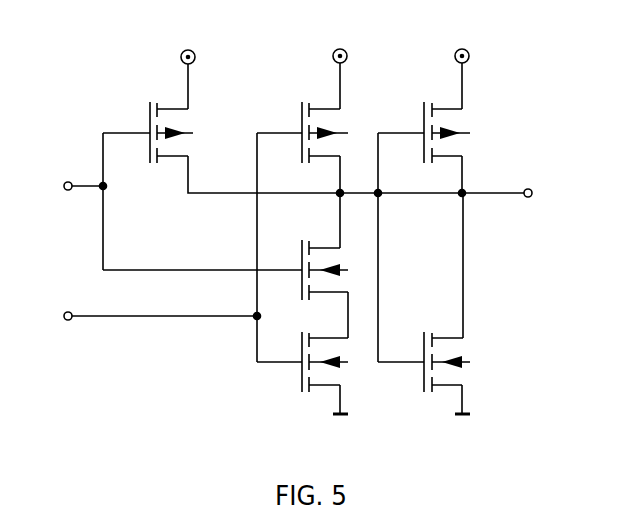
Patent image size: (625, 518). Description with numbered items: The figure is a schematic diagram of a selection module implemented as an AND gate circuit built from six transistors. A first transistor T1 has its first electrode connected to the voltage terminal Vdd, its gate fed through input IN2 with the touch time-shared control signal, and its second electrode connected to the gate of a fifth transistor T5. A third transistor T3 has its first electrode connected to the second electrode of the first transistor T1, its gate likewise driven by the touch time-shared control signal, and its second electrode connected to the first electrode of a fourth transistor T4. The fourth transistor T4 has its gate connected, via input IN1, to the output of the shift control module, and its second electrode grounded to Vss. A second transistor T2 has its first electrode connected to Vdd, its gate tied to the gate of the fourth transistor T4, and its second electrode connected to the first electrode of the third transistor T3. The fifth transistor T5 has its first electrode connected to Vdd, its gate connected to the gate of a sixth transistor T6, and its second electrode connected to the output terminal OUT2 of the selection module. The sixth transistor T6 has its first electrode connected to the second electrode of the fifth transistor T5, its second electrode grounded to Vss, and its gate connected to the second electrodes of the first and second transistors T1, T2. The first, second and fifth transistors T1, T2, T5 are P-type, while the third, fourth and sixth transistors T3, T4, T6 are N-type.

The first transistor T1 is at (154, 127).
The second transistor T2 is at (307, 127).
The third transistor T3 is at (307, 264).
The fourth transistor T4 is at (307, 356).
The fifth transistor T5 is at (429, 127).
The sixth transistor T6 is at (429, 356).
The first input terminal IN1 is at (160, 247).
The second input terminal IN2 is at (160, 201).
The output terminal of the selection module OUT2 is at (394, 247).
The voltage terminal Vdd is at (320, 66).
The ground terminal Vss is at (396, 368).